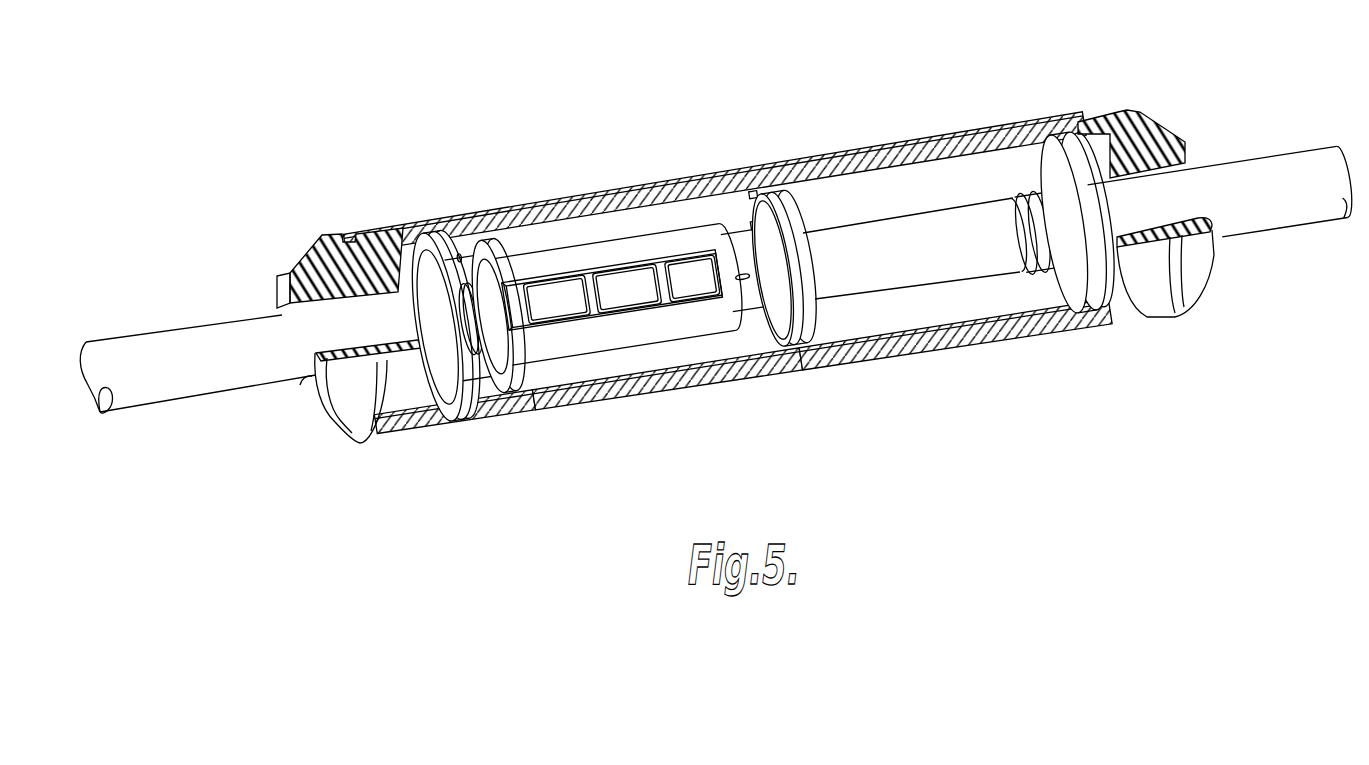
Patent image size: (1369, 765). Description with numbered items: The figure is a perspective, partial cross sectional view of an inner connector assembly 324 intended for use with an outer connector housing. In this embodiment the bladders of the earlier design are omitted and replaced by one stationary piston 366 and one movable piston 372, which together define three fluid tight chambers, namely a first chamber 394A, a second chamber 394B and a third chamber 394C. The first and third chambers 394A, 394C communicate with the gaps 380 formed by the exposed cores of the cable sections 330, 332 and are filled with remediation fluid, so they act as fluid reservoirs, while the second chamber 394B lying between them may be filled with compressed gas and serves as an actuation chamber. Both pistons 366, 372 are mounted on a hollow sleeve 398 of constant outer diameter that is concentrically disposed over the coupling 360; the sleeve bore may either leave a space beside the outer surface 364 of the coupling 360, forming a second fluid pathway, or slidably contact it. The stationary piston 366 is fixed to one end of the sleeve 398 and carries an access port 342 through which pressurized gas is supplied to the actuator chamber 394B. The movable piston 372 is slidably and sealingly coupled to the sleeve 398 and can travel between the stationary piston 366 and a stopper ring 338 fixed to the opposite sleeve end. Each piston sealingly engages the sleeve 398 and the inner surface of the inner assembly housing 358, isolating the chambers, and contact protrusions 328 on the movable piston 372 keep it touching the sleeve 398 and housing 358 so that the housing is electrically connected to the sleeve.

The inner connector assembly 324 is at (300, 172).
The contact protrusions 328 is at (757, 233).
The cable section 330 is at (202, 333).
The cable section 332 is at (1275, 163).
The stopper ring 338 is at (1023, 185).
The access port 342 is at (447, 252).
The inner assembly housing 358 is at (1155, 108).
The coupling 360 is at (568, 283).
The outer surface of the coupling 364 is at (697, 273).
The stationary piston 366 is at (500, 397).
The movable piston 372 is at (765, 327).
The gaps 380 is at (462, 310).
The first chamber 394A is at (478, 380).
The second chamber 394B is at (598, 367).
The third chamber 394C is at (932, 302).
The hollow sleeve 398 is at (907, 227).